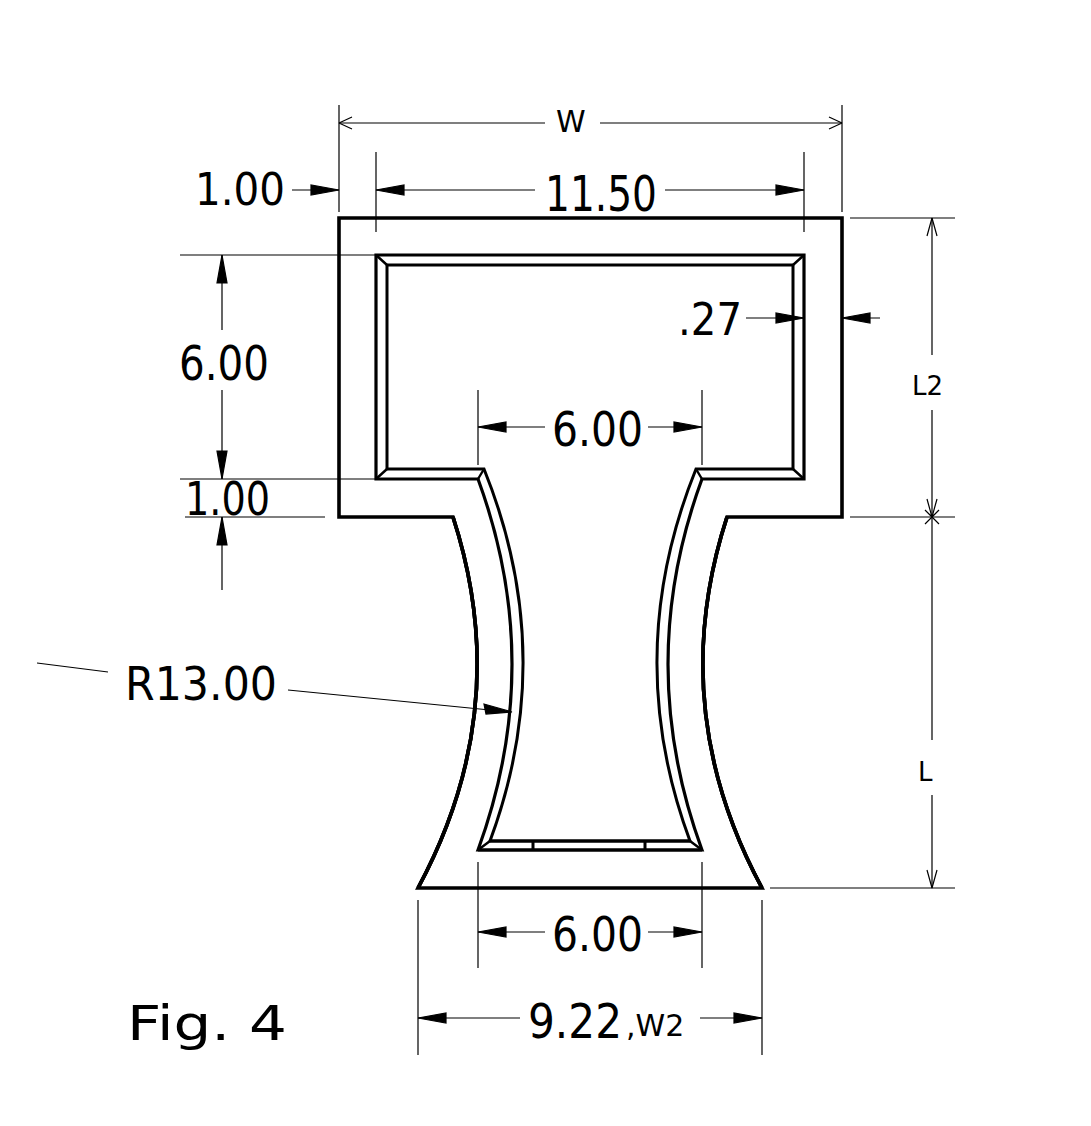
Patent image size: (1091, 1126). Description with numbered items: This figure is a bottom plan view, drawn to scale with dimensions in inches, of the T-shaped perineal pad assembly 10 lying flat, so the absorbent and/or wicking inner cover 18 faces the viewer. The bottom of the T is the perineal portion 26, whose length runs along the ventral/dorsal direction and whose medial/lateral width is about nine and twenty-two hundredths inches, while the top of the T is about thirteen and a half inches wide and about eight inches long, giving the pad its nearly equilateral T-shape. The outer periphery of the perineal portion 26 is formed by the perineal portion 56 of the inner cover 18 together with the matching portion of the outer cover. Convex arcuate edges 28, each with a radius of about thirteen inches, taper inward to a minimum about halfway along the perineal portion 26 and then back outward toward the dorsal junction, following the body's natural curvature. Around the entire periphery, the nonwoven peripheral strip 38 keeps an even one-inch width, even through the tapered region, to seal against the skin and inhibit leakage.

The pad assembly 10 is at (762, 76).
The inner cover 18 is at (778, 383).
The perineal portion 26 is at (782, 634).
The arcuate edges 28 is at (710, 740).
The peripheral strip 38 is at (688, 682).
The perineal portion of inner cover 56 is at (650, 813).